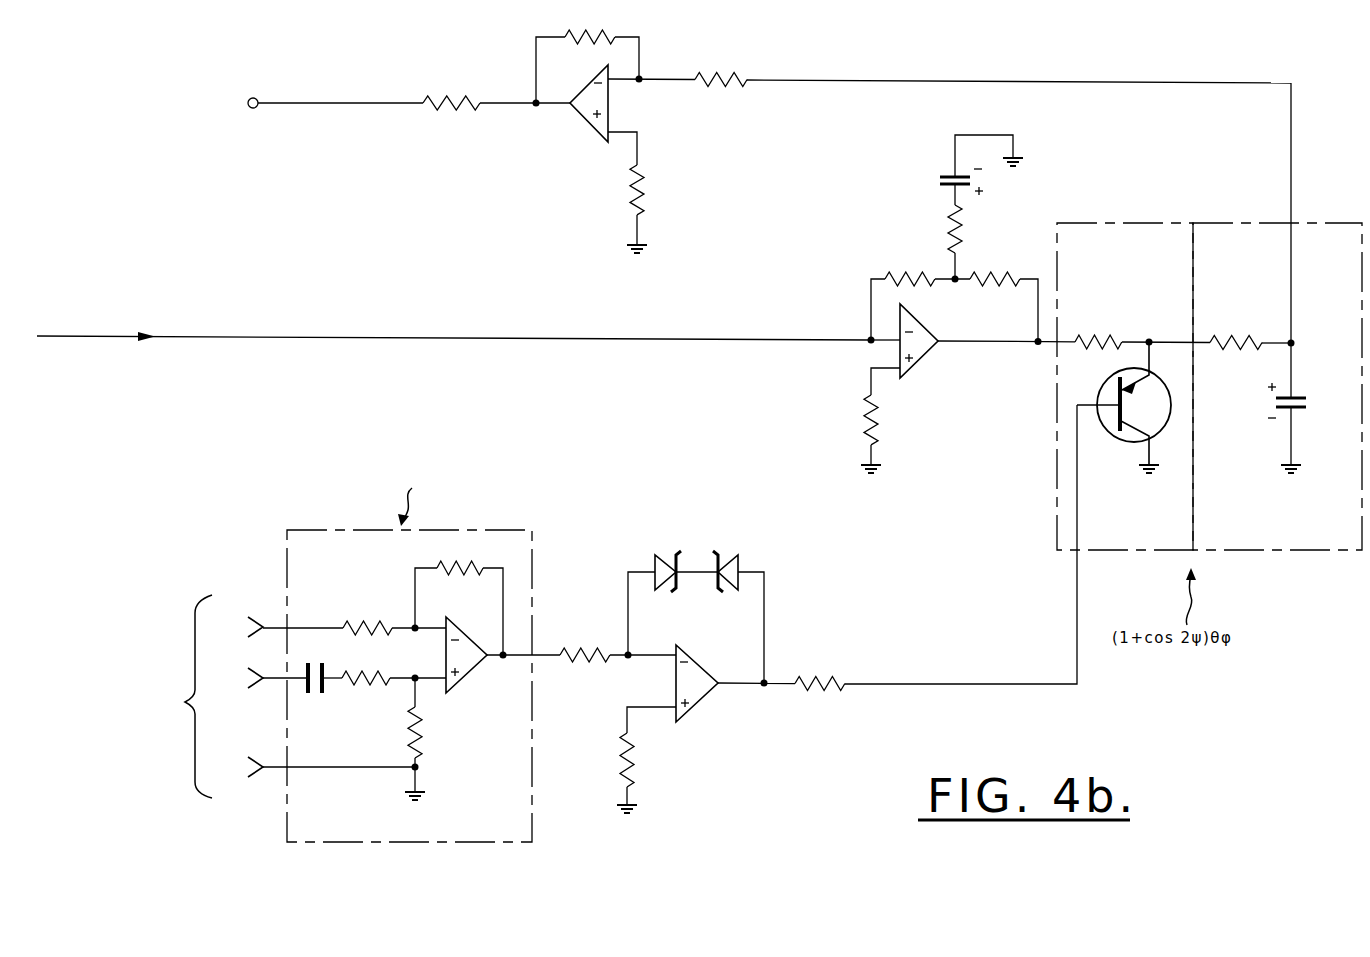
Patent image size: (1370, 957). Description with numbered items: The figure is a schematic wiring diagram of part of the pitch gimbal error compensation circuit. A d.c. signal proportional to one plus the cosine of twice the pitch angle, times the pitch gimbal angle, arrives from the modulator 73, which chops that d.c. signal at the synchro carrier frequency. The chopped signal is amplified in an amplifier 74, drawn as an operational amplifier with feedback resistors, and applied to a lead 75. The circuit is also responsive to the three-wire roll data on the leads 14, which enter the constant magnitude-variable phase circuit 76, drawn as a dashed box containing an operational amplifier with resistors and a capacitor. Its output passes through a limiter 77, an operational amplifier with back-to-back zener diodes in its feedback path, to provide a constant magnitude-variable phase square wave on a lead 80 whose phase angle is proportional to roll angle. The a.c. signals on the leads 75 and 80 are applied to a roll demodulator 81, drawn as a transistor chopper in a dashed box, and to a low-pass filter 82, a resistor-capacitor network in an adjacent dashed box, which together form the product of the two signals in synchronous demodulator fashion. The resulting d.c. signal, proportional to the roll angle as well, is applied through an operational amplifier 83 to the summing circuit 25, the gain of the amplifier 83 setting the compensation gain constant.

The operational amplifier 83 is at (494, 62).
The summing circuit 25 is at (233, 112).
The modulator 73 is at (99, 336).
The amplifier 74 is at (903, 381).
The lead 75 is at (1030, 343).
The roll demodulator 81 is at (1112, 223).
The low-pass filter 82 is at (1327, 223).
The lead 80 is at (1075, 592).
The constant magnitude-variable phase circuit 76 is at (531, 830).
The leads 14 is at (158, 728).
The limiter 77 is at (706, 695).